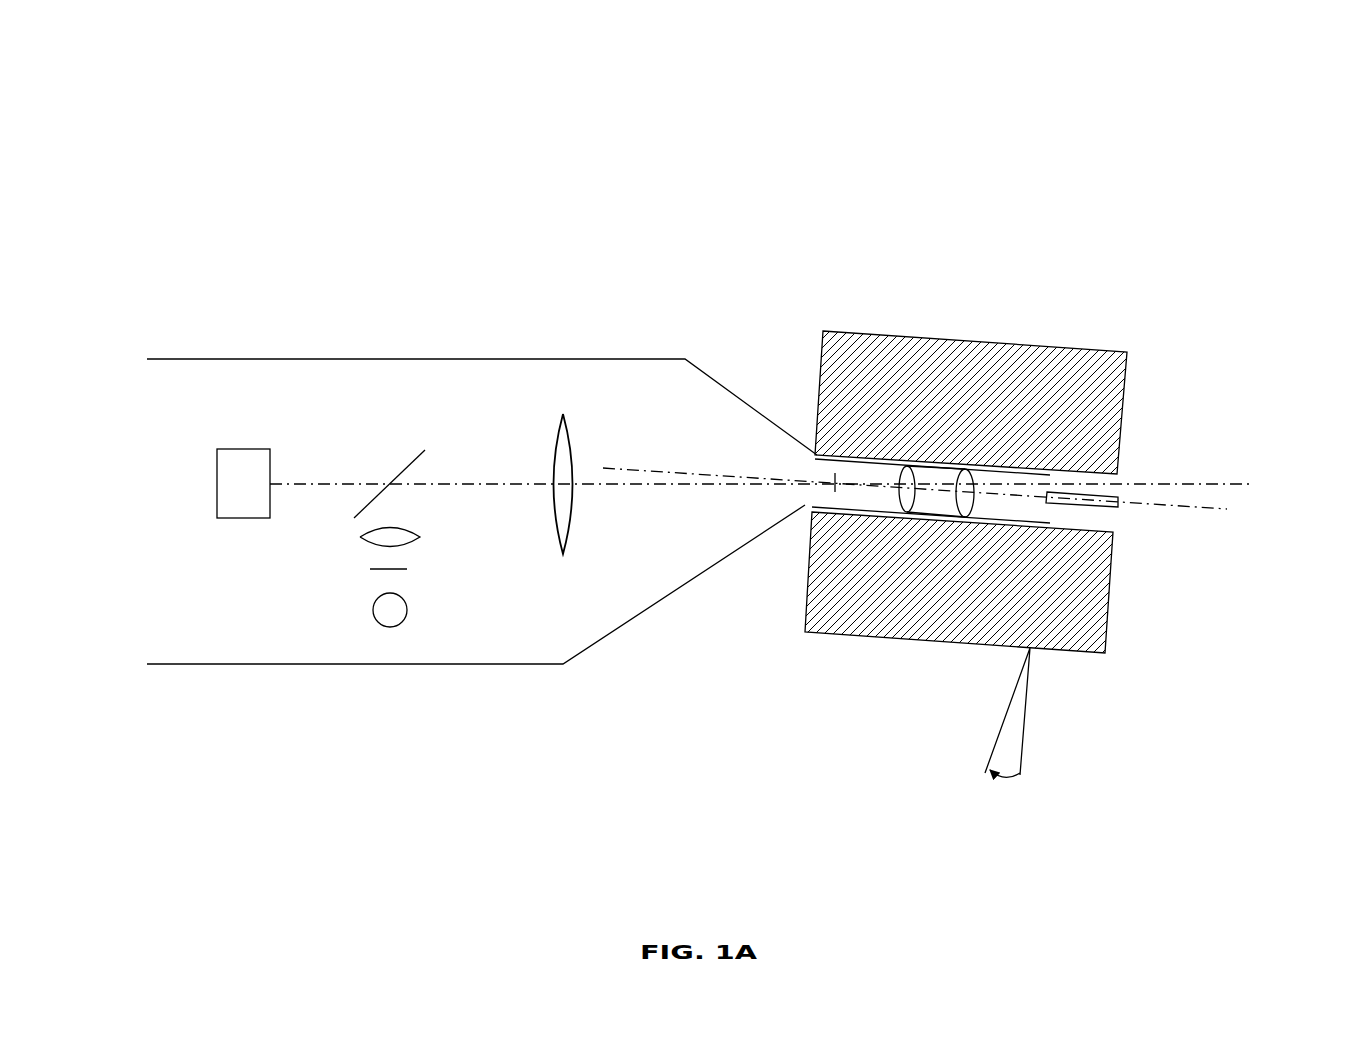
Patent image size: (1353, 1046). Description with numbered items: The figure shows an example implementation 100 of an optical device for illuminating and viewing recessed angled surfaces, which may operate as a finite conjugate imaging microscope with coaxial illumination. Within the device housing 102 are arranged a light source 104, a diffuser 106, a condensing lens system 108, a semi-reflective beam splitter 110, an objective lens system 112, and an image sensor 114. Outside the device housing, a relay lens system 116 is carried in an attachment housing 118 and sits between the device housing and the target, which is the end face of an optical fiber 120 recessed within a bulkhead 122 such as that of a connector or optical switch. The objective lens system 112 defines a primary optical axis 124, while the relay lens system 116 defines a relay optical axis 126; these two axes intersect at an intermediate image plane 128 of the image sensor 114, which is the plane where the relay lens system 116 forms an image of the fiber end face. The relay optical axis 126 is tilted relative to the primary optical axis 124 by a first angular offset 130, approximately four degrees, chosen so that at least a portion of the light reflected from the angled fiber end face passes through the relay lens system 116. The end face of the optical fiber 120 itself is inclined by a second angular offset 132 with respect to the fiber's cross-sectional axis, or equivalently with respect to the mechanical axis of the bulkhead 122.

The example implementation 100 is at (210, 63).
The device housing 102 is at (338, 358).
The light source 104 is at (373, 608).
The diffuser 106 is at (372, 569).
The condensing lens system 108 is at (360, 537).
The semi-reflective beam splitter 110 is at (417, 453).
The objective lens system 112 is at (552, 545).
The image sensor 114 is at (217, 484).
The relay lens system 116 is at (903, 503).
The attachment housing 118 is at (843, 505).
The optical fiber 120 is at (1115, 508).
The bulkhead 122 is at (1127, 400).
The primary optical axis 124 is at (660, 492).
The relay optical axis 126 is at (658, 463).
The intermediate image plane 128 is at (831, 474).
The first angular offset 130 is at (1235, 483).
The second angular offset 132 is at (1007, 731).